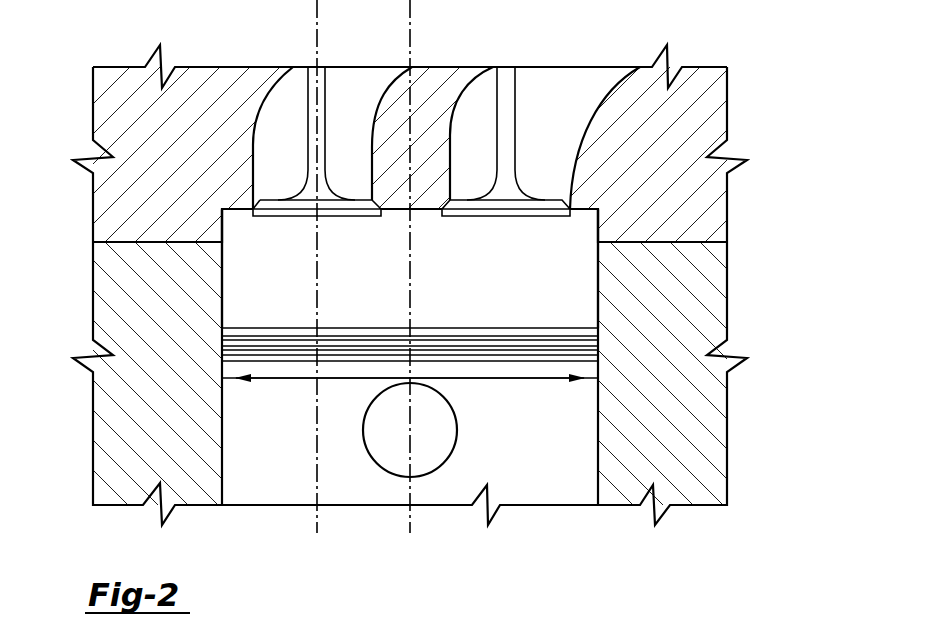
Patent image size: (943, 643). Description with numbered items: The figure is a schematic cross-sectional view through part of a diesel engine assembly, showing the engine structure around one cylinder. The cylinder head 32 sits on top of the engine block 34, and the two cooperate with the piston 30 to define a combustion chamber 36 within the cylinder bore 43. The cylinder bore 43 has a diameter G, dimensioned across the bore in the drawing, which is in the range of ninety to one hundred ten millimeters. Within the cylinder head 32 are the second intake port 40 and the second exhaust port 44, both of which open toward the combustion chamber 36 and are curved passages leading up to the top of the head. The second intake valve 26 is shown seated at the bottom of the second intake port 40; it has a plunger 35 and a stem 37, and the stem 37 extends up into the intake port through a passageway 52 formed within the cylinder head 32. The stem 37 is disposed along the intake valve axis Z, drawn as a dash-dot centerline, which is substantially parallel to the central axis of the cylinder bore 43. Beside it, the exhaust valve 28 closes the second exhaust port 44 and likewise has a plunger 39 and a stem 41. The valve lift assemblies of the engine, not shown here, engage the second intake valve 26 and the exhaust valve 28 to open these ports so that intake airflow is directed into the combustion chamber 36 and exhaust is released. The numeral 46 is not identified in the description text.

The second intake valve 26 is at (313, 146).
The exhaust valve 28 is at (513, 169).
The piston 30 is at (542, 485).
The cylinder head 32 is at (110, 210).
The engine block 34 is at (112, 402).
The plunger 35 is at (273, 203).
The combustion chamber 36 is at (418, 314).
The stem 37 is at (320, 123).
The plunger 39 is at (462, 203).
The second intake port 40 is at (265, 106).
The stem 41 is at (505, 122).
The cylinder bore 43 is at (220, 493).
The second exhaust port 44 is at (608, 97).
The combustion chamber 46 is at (397, 305).
The passageway 52 is at (305, 78).
The cylinder bore diameter G is at (503, 379).
The intake valve axis Z is at (358, 281).